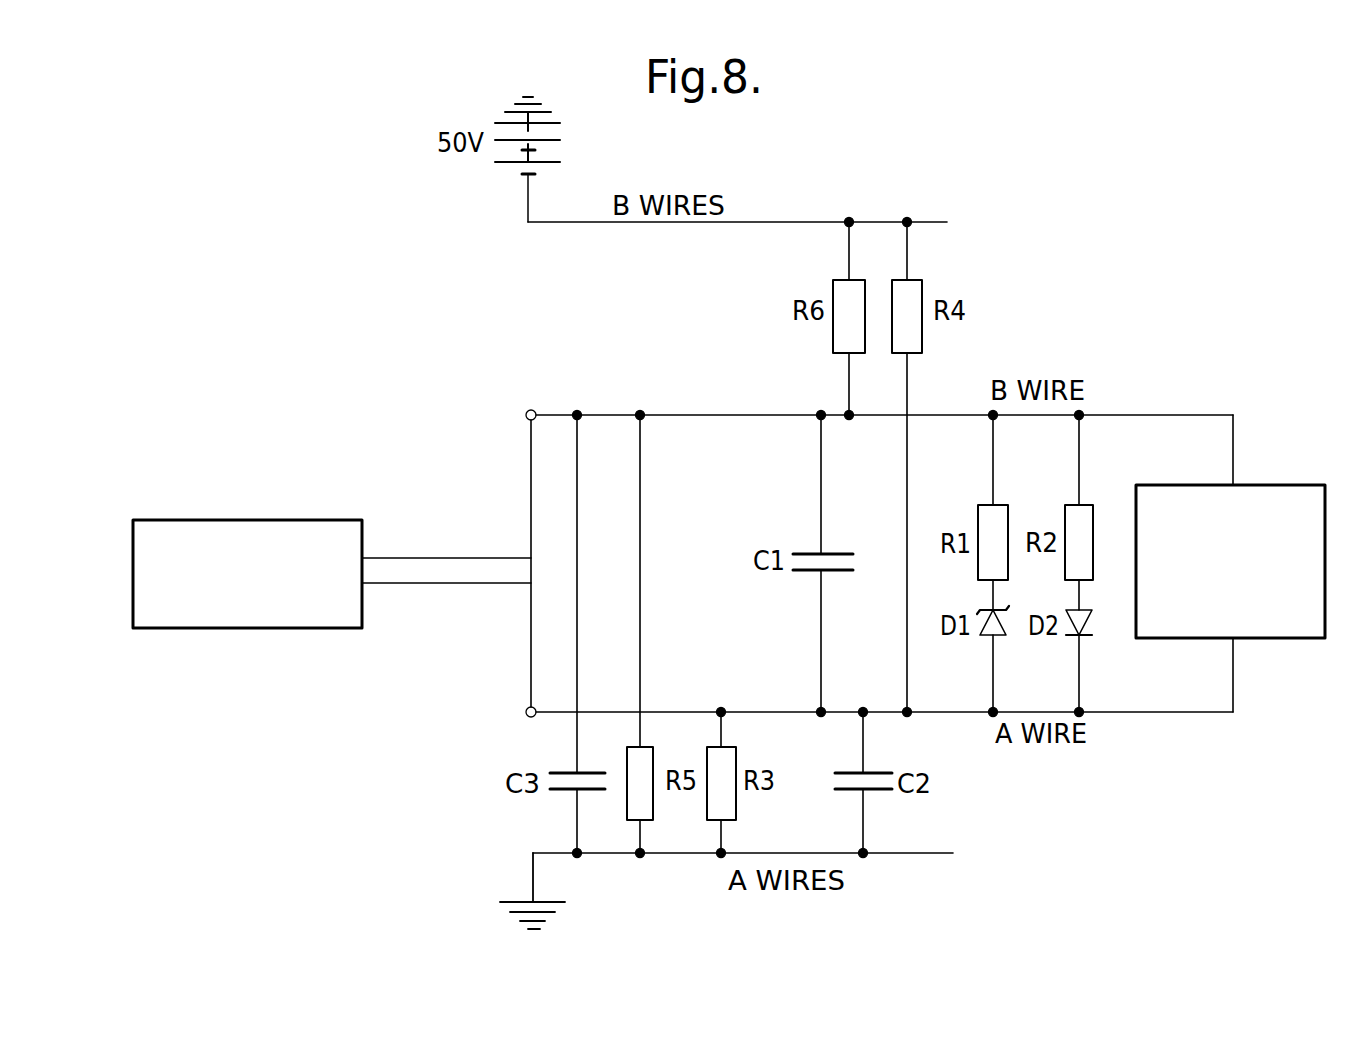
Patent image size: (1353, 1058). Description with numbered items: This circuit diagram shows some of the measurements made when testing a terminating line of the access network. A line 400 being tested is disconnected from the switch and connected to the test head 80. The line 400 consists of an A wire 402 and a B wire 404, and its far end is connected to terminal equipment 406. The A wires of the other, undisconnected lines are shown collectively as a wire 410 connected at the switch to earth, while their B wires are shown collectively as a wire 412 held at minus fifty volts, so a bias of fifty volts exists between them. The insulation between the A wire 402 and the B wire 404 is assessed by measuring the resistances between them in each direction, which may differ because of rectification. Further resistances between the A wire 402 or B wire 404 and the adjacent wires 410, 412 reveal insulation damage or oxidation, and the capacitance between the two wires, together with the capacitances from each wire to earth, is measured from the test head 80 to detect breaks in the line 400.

The test head 80 is at (196, 632).
The line 400 is at (444, 627).
The A wire 402 is at (756, 708).
The B wire 404 is at (746, 420).
The terminal equipment 406 is at (1270, 640).
The wire 410 is at (898, 856).
The wire 412 is at (676, 226).